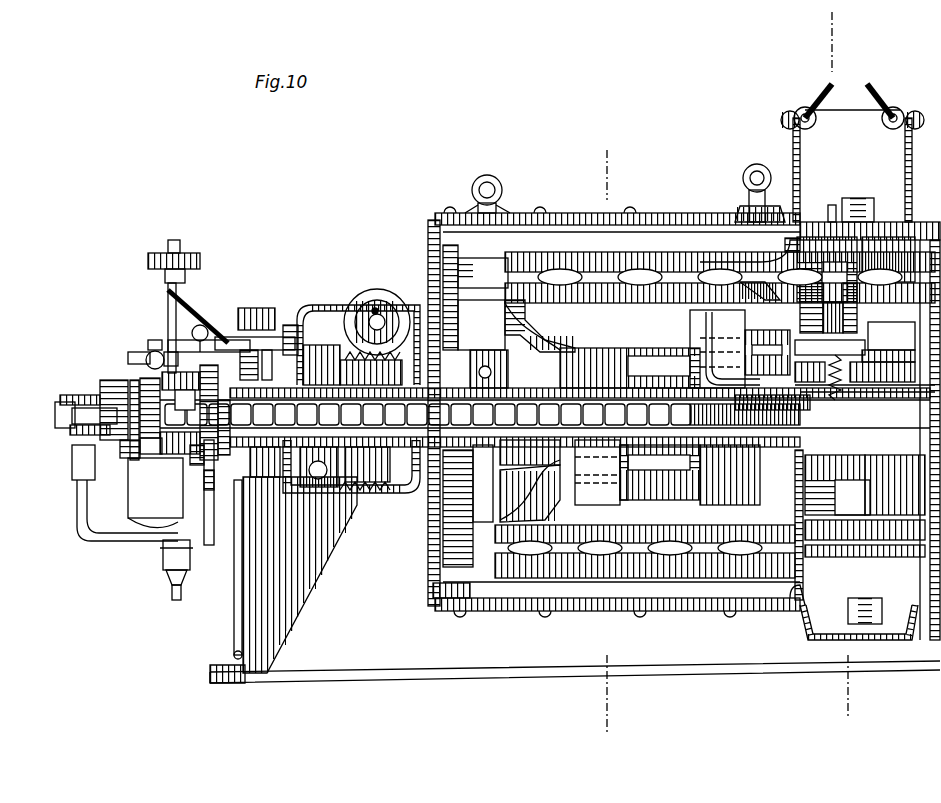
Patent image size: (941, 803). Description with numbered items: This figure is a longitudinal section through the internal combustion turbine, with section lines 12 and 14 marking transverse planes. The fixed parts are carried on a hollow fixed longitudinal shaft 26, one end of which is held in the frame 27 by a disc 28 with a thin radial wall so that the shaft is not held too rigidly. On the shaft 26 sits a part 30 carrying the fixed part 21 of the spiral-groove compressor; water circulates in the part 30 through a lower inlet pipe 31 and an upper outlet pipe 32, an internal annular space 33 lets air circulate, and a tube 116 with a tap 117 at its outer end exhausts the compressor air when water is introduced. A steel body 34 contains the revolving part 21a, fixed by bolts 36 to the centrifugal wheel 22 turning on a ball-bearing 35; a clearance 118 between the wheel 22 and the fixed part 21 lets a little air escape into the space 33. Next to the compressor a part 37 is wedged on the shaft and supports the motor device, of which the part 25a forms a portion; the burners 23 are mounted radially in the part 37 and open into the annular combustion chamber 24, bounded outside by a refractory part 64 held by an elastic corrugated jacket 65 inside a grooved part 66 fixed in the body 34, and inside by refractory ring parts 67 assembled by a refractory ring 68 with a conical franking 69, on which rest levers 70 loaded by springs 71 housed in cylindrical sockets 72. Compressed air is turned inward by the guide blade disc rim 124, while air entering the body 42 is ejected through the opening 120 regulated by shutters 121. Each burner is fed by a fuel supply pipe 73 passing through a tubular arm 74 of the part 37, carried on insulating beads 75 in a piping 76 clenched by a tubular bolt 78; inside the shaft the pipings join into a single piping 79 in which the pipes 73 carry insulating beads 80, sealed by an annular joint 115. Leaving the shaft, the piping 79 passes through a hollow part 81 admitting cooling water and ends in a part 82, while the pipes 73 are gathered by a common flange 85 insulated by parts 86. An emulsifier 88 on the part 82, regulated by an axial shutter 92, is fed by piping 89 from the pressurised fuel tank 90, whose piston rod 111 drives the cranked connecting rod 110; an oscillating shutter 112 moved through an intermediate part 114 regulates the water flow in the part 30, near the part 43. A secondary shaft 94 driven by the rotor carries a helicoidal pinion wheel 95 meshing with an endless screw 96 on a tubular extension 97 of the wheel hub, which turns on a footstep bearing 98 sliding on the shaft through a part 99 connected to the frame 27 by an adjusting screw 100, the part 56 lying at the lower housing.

The section line 12- 12 is at (596, 438).
The section line 14- 14 is at (824, 365).
The compressor device 21 is at (592, 290).
The revolving part of the compressor 21a is at (594, 268).
The centrifugal wheel 22 is at (437, 292).
The burner 23 is at (878, 348).
The combustion chamber 24 is at (885, 322).
The cover plate 25a is at (899, 605).
The fixed longitudinal shaft 26 is at (404, 472).
The frame 27 is at (272, 640).
The disc 28 is at (240, 516).
The part supporting the fixed compressor part 30 is at (589, 356).
The lower inlet pipe 31 is at (622, 493).
The upper outlet pipe 32 is at (690, 331).
The internal annular space 33 is at (630, 362).
The steel body 34 is at (524, 262).
The ball-bearing 35 is at (492, 360).
The bolts 36 is at (484, 266).
The part supporting the fixed motor portion 37 is at (898, 362).
The body 42 is at (887, 236).
The lever 43 is at (192, 342).
The housing flange 56 is at (798, 597).
The refractory part 64 is at (795, 246).
The elastic corrugated jacket 65 is at (831, 205).
The part with cooling grooves 66 is at (853, 198).
The fixed ring 67 is at (823, 297).
The refractory ring 68 is at (812, 262).
The conical franking 69 is at (840, 304).
The levers 70 is at (762, 282).
The springs 71 is at (722, 262).
The cylindrical sockets 72 is at (747, 324).
The fuel supply pipe 73 is at (818, 372).
The tubular arm 74 is at (852, 372).
The insulating beads 75 is at (785, 400).
The piping 76 is at (830, 395).
The tubular bolt 78 is at (186, 424).
The single piping 79 is at (698, 430).
The insulating beads 80 is at (600, 418).
The hollow part 81 is at (190, 493).
The end part 82 is at (180, 457).
The common flange 85 is at (133, 450).
The insulating parts 86 is at (138, 460).
The emulsifier 88 is at (125, 402).
The piping 89 is at (83, 505).
The fuel tank 90 is at (138, 498).
The axial shutter 92 is at (68, 437).
The secondary shaft 94 is at (374, 310).
The pin 95 is at (387, 302).
The endless screw 96 is at (348, 360).
The tubular extension 97 is at (372, 390).
The footstep bearing 98 is at (338, 522).
The adjusting part 99 is at (287, 325).
The adjusting screw 100 is at (253, 337).
The cranked connecting rod 110 is at (203, 302).
The piston rod 111 is at (168, 297).
The oscillating shutter 112 is at (627, 491).
The intermediate part 114 is at (206, 482).
The annular joint 115 is at (665, 438).
The tube 116 is at (704, 314).
The tap 117 is at (148, 356).
The clearance 118 is at (481, 325).
The opening 120 is at (845, 125).
The shutters 121 is at (825, 97).
The guide blade disc rim 124 is at (780, 572).